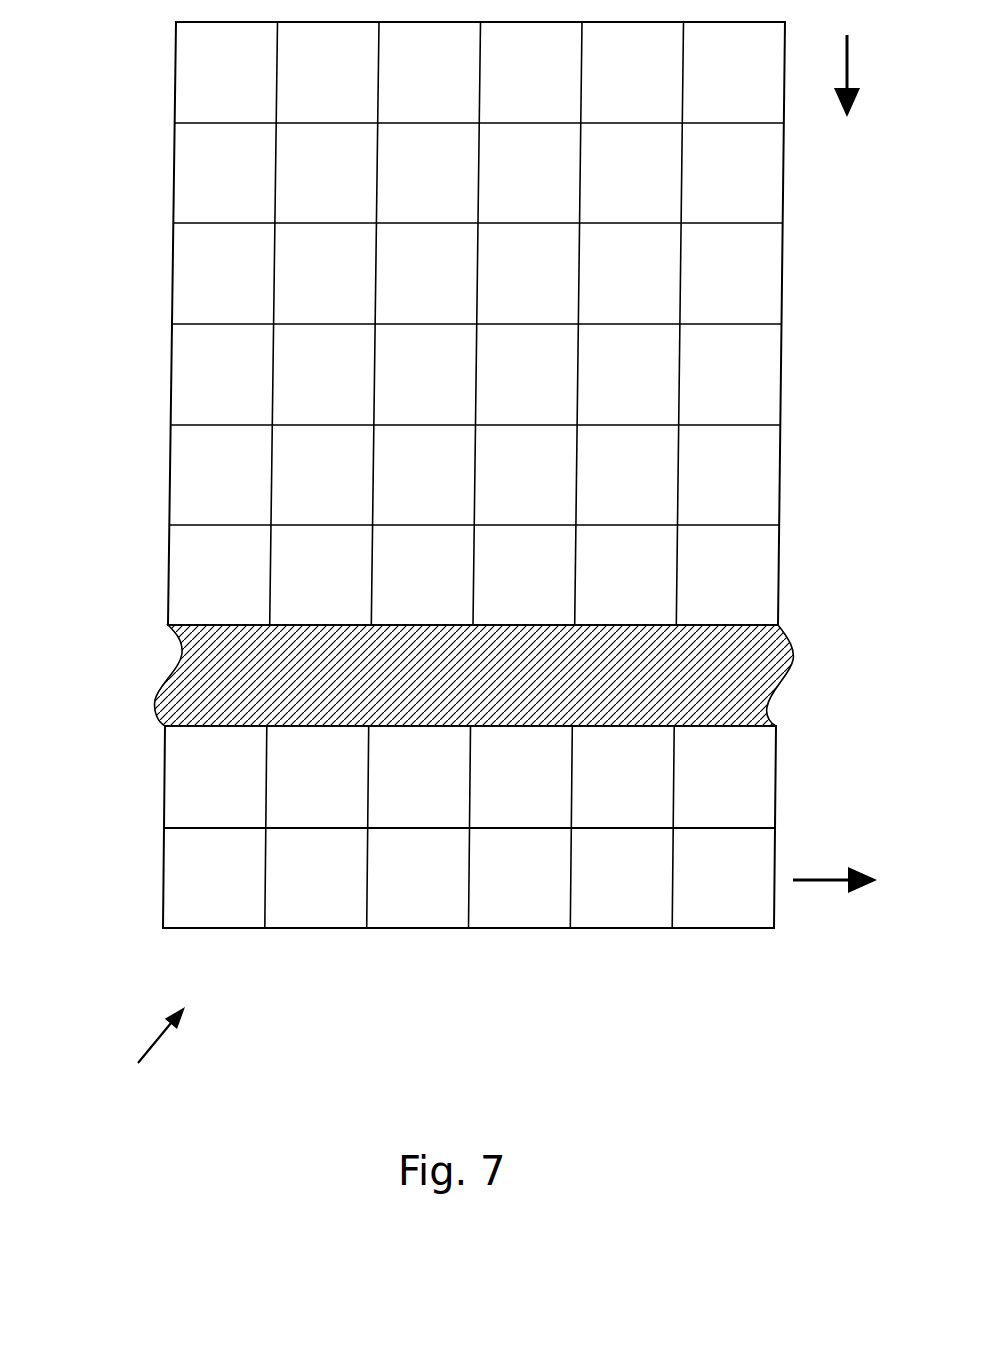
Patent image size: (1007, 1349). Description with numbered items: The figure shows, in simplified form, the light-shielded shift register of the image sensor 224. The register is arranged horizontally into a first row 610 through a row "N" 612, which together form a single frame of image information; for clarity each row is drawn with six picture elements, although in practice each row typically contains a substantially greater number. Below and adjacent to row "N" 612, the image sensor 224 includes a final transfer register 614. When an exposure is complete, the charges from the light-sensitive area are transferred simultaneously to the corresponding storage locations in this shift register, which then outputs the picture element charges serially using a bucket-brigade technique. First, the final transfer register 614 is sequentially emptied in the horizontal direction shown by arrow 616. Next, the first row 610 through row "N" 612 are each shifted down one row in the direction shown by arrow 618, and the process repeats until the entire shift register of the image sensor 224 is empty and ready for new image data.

The row 1 610 is at (176, 22).
The row "N" 612 is at (165, 726).
The final transfer register 614 is at (163, 923).
The arrow 616 is at (835, 880).
The arrow 618 is at (848, 62).
The image sensor 224 is at (134, 1067).